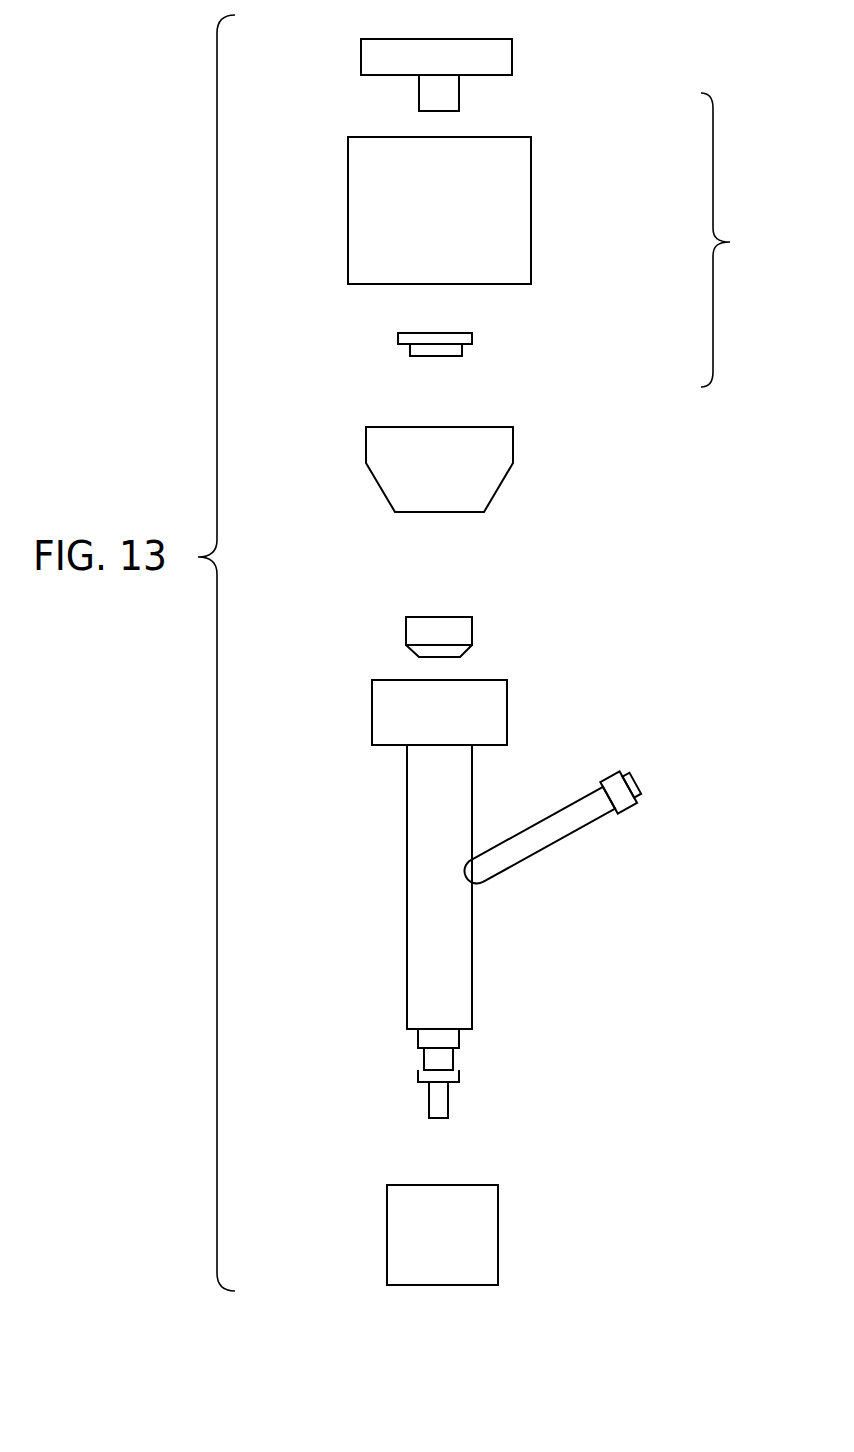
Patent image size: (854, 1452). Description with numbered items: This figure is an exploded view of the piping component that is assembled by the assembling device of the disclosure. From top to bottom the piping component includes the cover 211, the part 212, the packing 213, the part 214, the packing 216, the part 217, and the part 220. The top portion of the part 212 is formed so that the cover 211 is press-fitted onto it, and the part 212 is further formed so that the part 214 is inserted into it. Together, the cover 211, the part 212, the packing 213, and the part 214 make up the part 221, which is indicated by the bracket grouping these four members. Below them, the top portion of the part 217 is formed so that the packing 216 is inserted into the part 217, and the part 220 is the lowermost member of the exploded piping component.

The cover 211 is at (503, 57).
The part 212 is at (531, 193).
The packing 213 is at (470, 340).
The part 214 is at (490, 447).
The packing 216 is at (462, 630).
The part 217 is at (490, 709).
The part 220 is at (483, 1238).
The part 221 is at (738, 240).